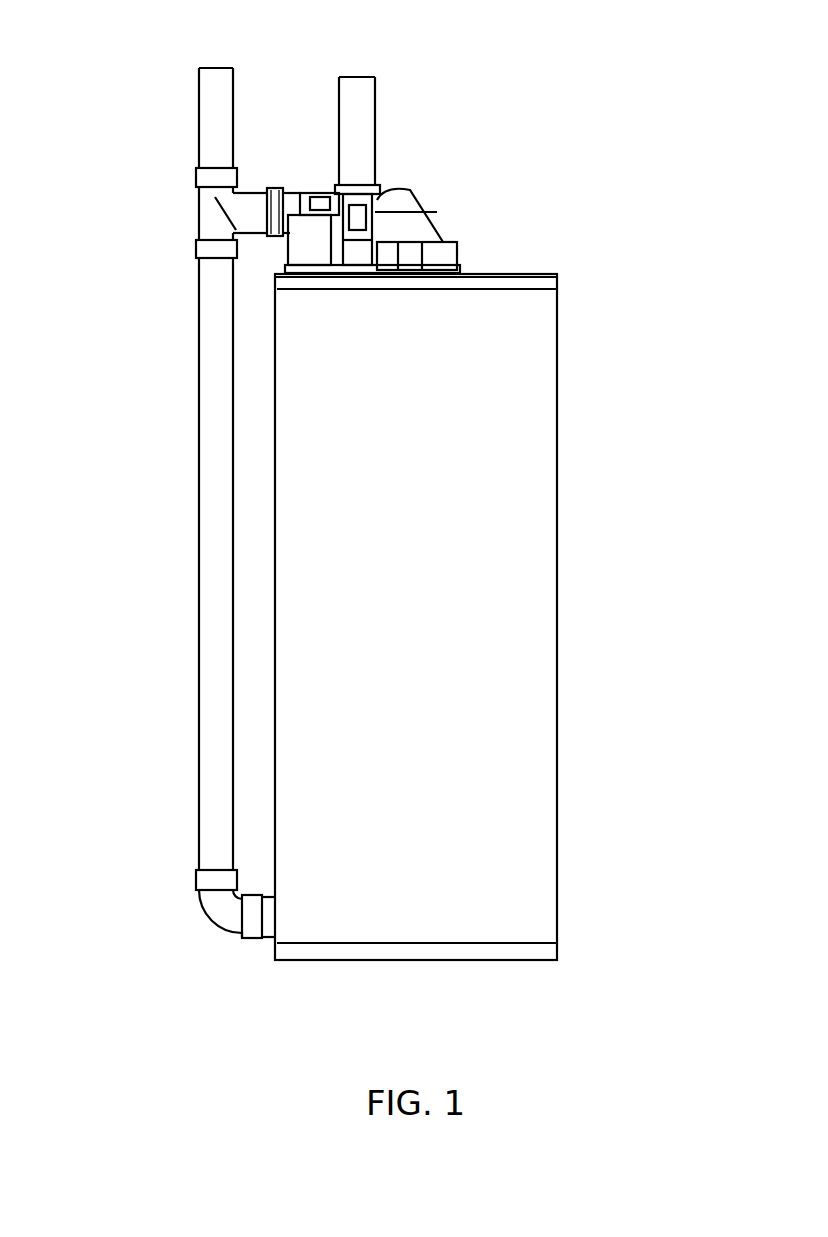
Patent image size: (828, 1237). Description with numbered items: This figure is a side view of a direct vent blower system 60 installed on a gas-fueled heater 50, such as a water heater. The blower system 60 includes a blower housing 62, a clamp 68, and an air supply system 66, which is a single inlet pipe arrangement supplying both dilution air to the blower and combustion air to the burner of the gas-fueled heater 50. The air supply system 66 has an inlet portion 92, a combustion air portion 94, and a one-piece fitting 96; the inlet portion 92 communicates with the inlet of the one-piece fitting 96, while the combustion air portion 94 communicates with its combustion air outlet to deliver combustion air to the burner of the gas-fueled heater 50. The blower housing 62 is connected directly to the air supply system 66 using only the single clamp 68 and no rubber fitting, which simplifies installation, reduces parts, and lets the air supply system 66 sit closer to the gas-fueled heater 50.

The gas-fueled heater 50 is at (595, 427).
The blower system 60 is at (379, 137).
The blower housing 62 is at (403, 186).
The air supply system 66 is at (165, 305).
The clamp 68 is at (273, 185).
The inlet portion 92 is at (199, 128).
The combustion air portion 94 is at (198, 580).
The one-piece fitting 96 is at (208, 222).